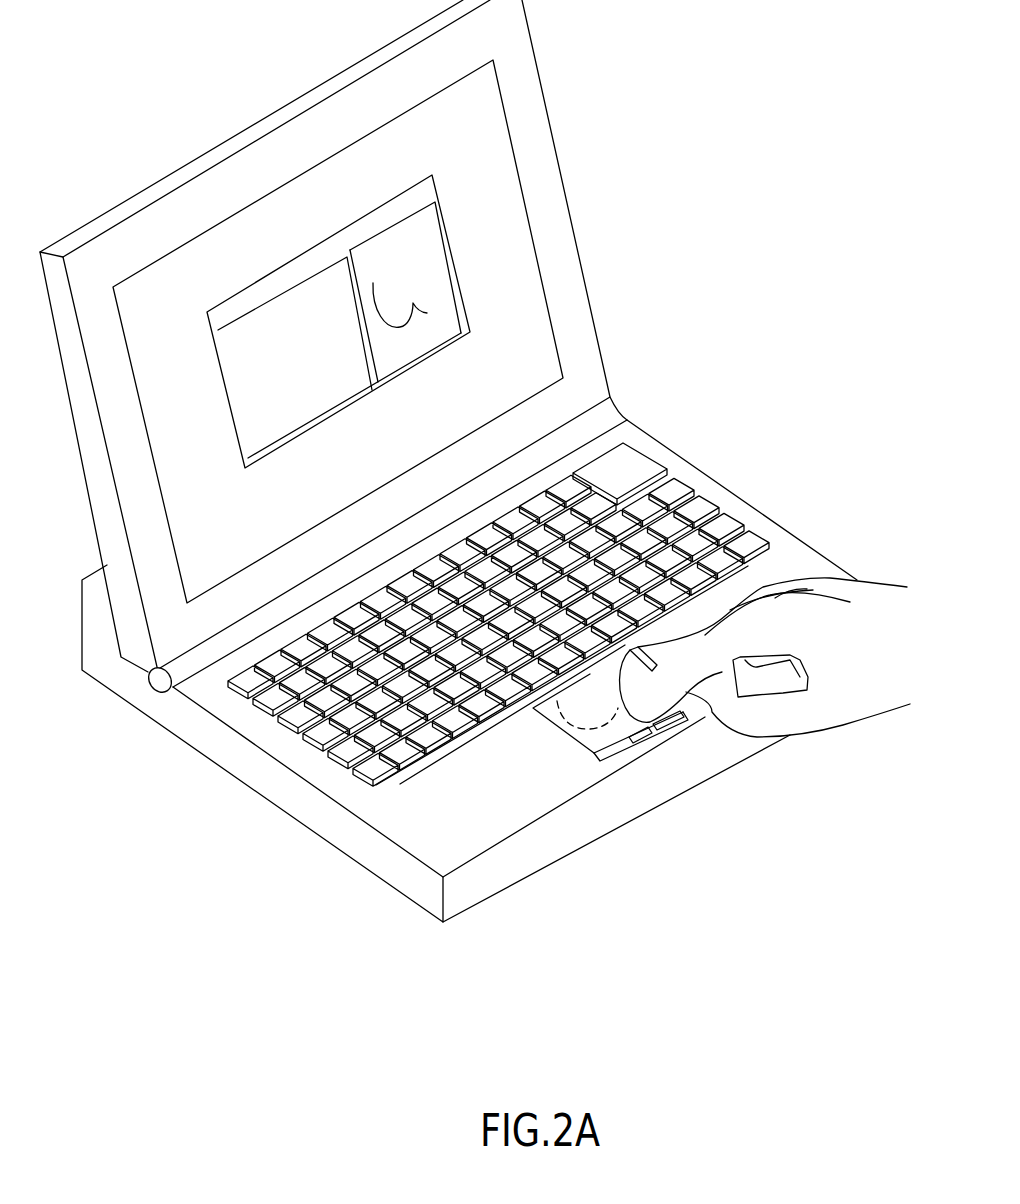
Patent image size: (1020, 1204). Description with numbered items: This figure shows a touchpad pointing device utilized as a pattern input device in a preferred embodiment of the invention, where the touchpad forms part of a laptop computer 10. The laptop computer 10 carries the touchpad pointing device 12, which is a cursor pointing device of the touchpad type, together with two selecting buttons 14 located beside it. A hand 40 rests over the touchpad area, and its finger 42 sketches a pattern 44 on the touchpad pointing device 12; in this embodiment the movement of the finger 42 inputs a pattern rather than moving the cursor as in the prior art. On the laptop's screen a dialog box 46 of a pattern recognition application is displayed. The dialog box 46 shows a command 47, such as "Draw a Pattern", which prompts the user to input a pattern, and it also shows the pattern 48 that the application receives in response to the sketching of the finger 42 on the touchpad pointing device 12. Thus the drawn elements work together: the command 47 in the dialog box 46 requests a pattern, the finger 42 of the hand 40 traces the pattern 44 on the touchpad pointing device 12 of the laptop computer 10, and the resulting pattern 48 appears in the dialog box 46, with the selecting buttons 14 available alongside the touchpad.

The laptop computer 10 is at (660, 450).
The touchpad pointing device 12 is at (563, 710).
The selecting buttons 14 is at (686, 720).
The hand 40 is at (867, 660).
The finger 42 is at (710, 647).
The pattern 44 is at (597, 727).
The dialog box 46 is at (422, 195).
The command 47 is at (258, 430).
The pattern 48 is at (403, 327).